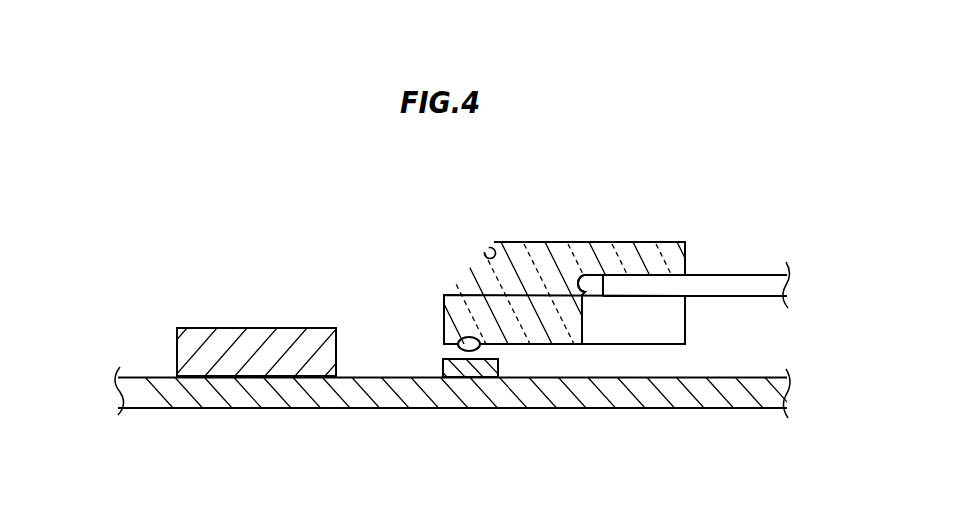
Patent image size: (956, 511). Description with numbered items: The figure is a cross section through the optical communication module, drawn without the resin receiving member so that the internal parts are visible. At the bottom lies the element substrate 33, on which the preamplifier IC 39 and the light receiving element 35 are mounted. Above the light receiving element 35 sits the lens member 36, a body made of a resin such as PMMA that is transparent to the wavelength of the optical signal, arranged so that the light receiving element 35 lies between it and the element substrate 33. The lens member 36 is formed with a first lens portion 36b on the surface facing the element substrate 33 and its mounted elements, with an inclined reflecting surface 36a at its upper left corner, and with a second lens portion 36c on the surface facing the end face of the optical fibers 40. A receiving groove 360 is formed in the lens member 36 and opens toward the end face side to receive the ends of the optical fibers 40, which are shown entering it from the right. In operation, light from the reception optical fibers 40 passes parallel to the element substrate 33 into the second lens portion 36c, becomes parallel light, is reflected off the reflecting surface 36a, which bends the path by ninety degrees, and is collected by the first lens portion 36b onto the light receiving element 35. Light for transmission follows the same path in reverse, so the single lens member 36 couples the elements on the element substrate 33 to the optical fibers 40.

The element substrate 33 is at (172, 393).
The light receiving element 35 is at (477, 368).
The lens member 36 is at (565, 248).
The reflecting surface 36a is at (488, 252).
The first lens portion 36b is at (460, 345).
The second lens portion 36c is at (585, 277).
The preamplifier IC 39 is at (280, 353).
The optical fibers 40 is at (743, 282).
The receiving groove 360 is at (668, 318).